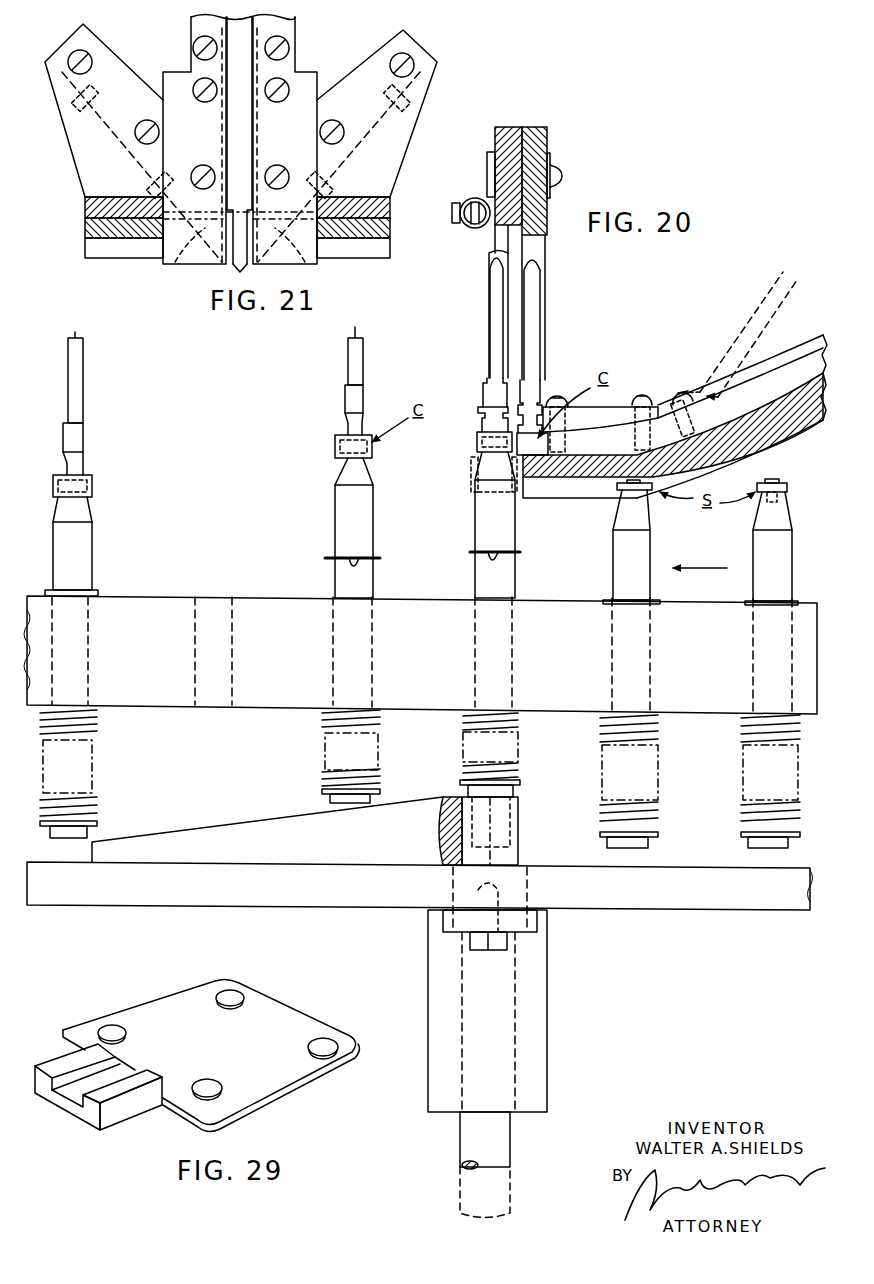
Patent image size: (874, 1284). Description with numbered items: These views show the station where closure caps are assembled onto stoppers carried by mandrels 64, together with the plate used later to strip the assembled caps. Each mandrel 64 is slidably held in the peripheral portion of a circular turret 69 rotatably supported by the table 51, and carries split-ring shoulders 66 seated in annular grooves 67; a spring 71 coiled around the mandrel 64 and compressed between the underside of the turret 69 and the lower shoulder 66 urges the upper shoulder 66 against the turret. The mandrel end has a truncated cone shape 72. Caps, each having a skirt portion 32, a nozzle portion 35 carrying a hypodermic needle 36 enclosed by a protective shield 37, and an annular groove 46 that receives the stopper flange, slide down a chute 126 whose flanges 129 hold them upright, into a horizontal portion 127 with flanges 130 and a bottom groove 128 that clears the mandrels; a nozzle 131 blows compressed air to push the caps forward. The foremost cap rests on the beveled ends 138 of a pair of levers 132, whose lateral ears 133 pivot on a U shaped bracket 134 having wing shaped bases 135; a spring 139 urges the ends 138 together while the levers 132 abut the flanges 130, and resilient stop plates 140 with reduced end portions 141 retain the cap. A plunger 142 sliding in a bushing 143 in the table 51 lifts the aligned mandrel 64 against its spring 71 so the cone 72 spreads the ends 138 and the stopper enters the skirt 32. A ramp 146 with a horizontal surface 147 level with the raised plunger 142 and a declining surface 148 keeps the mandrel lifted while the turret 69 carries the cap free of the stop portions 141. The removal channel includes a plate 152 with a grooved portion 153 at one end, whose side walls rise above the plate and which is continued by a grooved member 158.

In FIG. 21, the flanges 129 is at (200, 36).
In FIG. 20, the flanges 129 is at (760, 367).
In FIG. 21, the flanges 130 is at (182, 68).
In FIG. 20, the flanges 130 is at (610, 405).
In FIG. 20, the nozzle 131 is at (714, 325).
In FIG. 20, the levers 132 is at (496, 240).
In FIG. 20, the lateral ears 133 is at (510, 126).
In FIG. 21, the U shaped bracket 134 is at (388, 208).
In FIG. 20, the U shaped bracket 134 is at (550, 140).
In FIG. 21, the wing shaped bases 135 is at (88, 170).
In FIG. 21, the beveled ends 138 is at (240, 268).
In FIG. 20, the spring 139 is at (462, 226).
In FIG. 21, the plates 140 is at (78, 155).
In FIG. 21, the end portions 141 is at (180, 262).
In FIG. 20, the protective shield 37 is at (84, 380).
In FIG. 20, the hypodermic needle 36 is at (358, 328).
In FIG. 20, the nozzle portion 35 is at (84, 462).
In FIG. 20, the annular groove 46 is at (333, 447).
In FIG. 20, the skirt portion 32 is at (374, 445).
In FIG. 20, the truncated cone shape 72 is at (365, 470).
In FIG. 20, the grooved member 158 is at (470, 492).
In FIG. 20, the annular groove 67 is at (352, 560).
In FIG. 20, the split ring 66 is at (378, 554).
In FIG. 20, the mandrels 64 is at (93, 566).
In FIG. 20, the chute 126 is at (770, 448).
In FIG. 20, the horizontal portion 127 is at (563, 477).
In FIG. 20, the groove 128 is at (594, 492).
In FIG. 20, the turret 69 is at (420, 655).
In FIG. 20, the spring 71 is at (325, 733).
In FIG. 20, the declining surface 148 is at (178, 830).
In FIG. 20, the ramp 146 is at (255, 843).
In FIG. 20, the horizontal surface 147 is at (435, 798).
In FIG. 20, the plunger 142 is at (510, 828).
In FIG. 20, the bushing 143 is at (520, 880).
In FIG. 20, the table 51 is at (655, 912).
In FIG. 29, the plate 152 is at (305, 1083).
In FIG. 29, the grooved portion 153 is at (118, 1115).